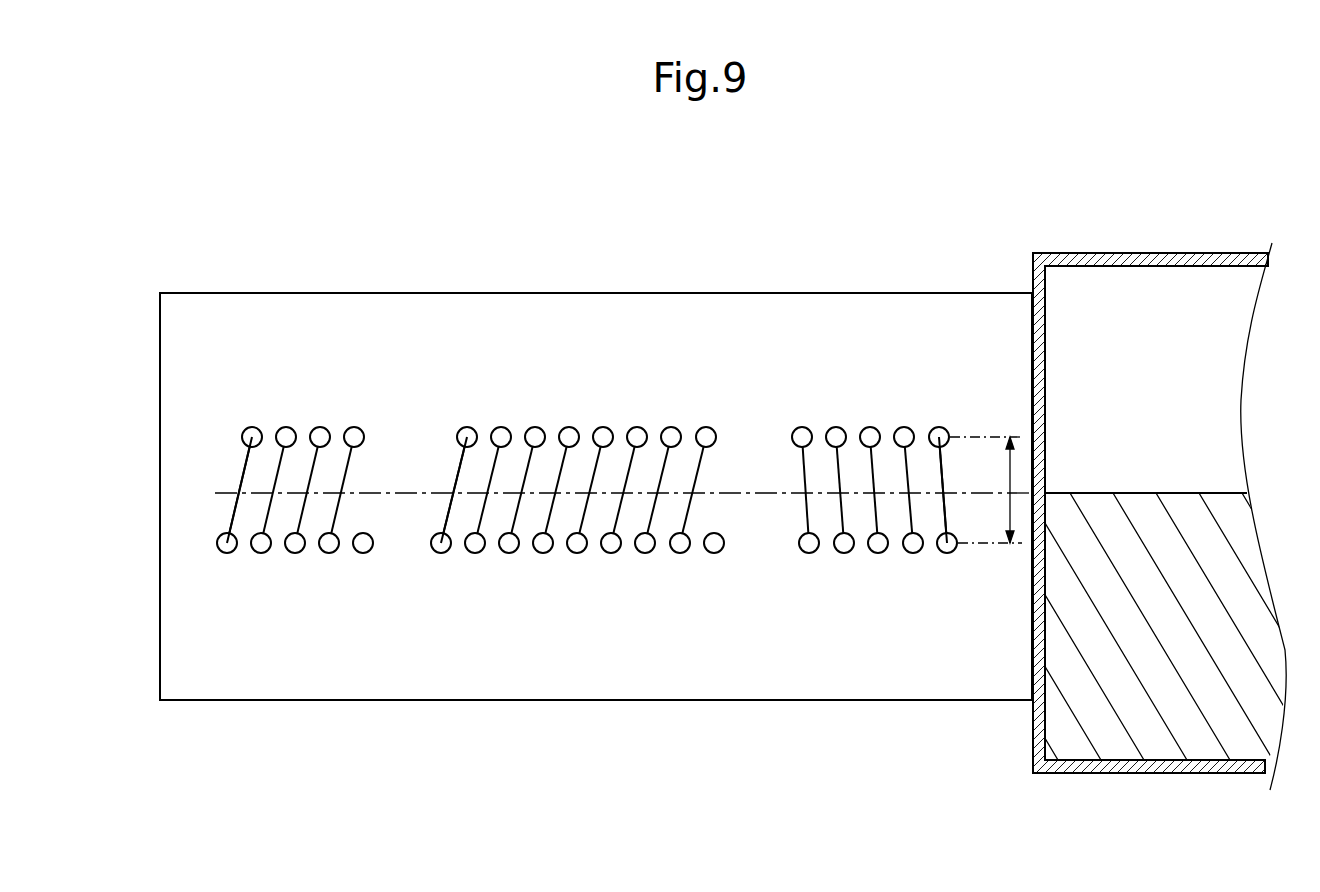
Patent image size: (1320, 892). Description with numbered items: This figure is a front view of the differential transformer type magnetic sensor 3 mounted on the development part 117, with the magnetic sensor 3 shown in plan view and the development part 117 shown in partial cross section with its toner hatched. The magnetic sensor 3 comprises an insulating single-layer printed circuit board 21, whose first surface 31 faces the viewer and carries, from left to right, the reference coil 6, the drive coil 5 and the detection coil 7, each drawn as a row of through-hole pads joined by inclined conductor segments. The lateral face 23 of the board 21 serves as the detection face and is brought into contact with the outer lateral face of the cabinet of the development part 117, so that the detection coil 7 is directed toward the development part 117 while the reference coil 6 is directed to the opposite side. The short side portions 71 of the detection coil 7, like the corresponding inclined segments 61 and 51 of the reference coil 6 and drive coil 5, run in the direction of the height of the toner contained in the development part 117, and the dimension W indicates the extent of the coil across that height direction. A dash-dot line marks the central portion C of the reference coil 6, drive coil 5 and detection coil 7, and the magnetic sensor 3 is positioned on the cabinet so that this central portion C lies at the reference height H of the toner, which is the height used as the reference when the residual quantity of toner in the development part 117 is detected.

The differential transformer type magnetic sensor 3 is at (256, 239).
The first surface 31 is at (193, 318).
The board 21 is at (443, 293).
The central portion C is at (749, 493).
The reference coil 6 is at (305, 425).
The paddle blade of first conveying member 61 is at (243, 463).
The drive coil 5 is at (561, 422).
The paddle blade of second conveying member 51 is at (447, 515).
The detection coil 7 is at (865, 420).
The short side portions 71 is at (947, 513).
The width of paddle W is at (1010, 480).
The lateral face 23 is at (1032, 320).
The development part 117 is at (1132, 253).
The reference height H is at (1123, 493).